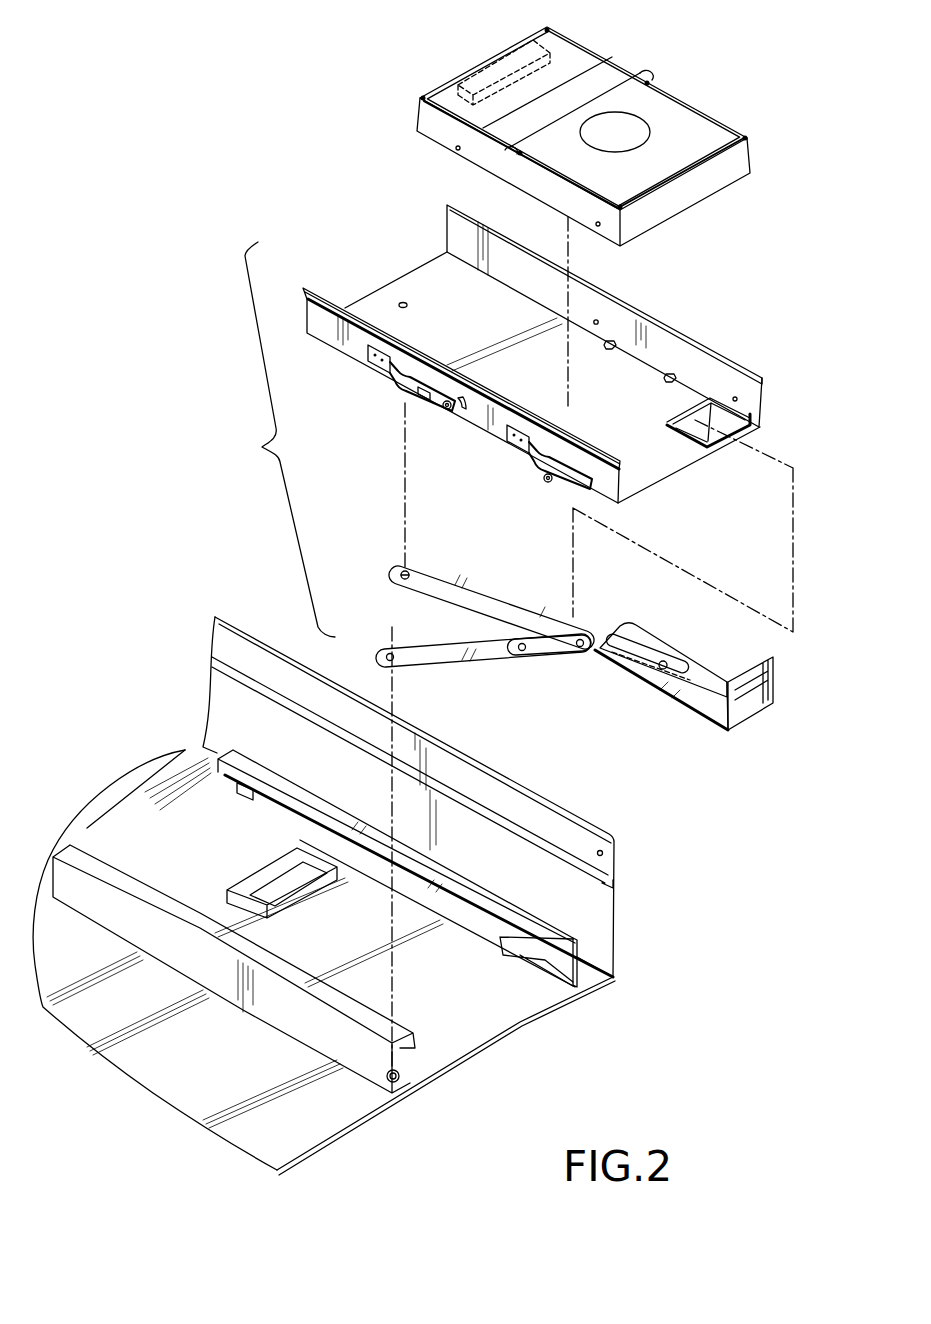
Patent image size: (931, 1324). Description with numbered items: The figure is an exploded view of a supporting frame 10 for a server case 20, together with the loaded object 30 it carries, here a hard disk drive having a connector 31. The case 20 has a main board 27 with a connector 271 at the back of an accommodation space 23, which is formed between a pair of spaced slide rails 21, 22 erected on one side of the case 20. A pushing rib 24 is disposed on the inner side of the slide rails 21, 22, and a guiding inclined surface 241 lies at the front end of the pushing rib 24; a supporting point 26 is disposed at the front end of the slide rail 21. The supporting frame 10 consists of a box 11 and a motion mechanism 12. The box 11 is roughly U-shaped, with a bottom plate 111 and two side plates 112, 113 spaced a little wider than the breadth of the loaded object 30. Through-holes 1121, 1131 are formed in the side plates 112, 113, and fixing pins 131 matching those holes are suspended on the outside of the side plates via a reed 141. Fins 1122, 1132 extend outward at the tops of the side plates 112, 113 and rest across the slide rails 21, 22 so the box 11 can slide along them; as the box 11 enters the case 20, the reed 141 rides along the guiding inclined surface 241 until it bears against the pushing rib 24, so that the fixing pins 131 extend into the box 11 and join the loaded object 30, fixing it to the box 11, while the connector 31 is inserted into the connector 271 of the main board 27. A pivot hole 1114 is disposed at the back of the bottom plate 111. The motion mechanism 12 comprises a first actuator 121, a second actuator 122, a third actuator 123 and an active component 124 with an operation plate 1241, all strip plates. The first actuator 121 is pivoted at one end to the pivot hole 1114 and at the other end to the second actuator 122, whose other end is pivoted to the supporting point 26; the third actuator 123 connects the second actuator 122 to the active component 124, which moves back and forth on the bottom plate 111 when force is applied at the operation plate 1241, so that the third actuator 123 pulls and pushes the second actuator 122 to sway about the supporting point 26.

The supporting frame 10 is at (286, 439).
The box 11 is at (380, 262).
The bottom plate 111 is at (440, 272).
The pivot hole 1114 is at (398, 303).
The through-holes 1121 is at (463, 404).
The fin 1122 is at (345, 312).
The side plate 112 is at (365, 347).
The side plate 113 is at (665, 348).
The through-holes 1131 is at (598, 320).
The fin 1132 is at (727, 363).
The fixing pins 131 is at (444, 409).
The reed 141 is at (545, 481).
The motion mechanism 12 is at (512, 577).
The first actuator 121 is at (440, 595).
The second actuator 122 is at (450, 657).
The third actuator 123 is at (588, 660).
The active component 124 is at (697, 665).
The operation plate 1241 is at (755, 692).
The server case 20 is at (283, 1108).
The slide rail 21 is at (312, 1025).
The slide rail 22 is at (590, 947).
The accommodation space 23 is at (462, 1028).
The pushing rib 24 is at (452, 918).
The guiding inclined surface 241 is at (545, 960).
The supporting point 26 is at (410, 1085).
The main board 27 is at (110, 810).
The connector 271 is at (283, 883).
The loaded object 30 is at (610, 73).
The connector 31 is at (488, 72).